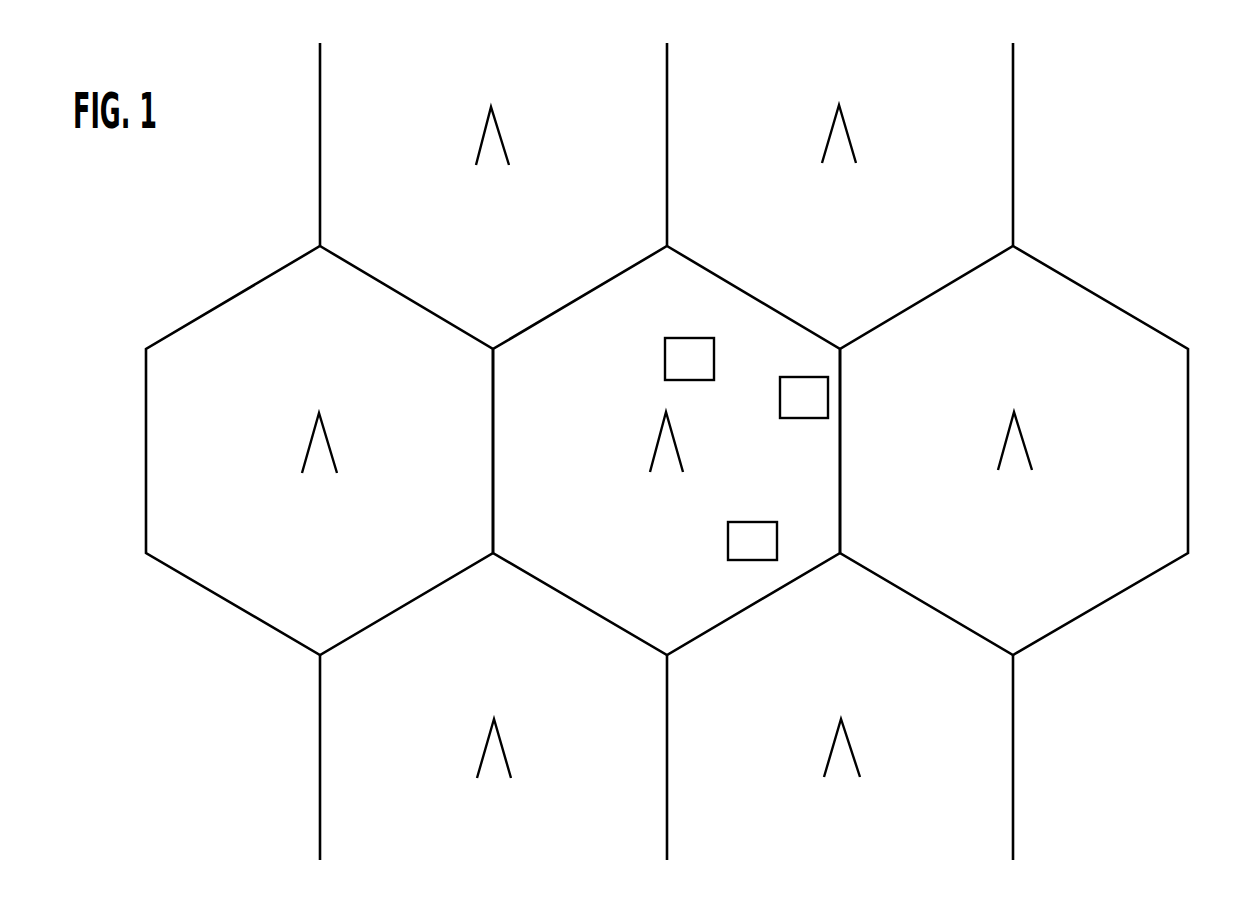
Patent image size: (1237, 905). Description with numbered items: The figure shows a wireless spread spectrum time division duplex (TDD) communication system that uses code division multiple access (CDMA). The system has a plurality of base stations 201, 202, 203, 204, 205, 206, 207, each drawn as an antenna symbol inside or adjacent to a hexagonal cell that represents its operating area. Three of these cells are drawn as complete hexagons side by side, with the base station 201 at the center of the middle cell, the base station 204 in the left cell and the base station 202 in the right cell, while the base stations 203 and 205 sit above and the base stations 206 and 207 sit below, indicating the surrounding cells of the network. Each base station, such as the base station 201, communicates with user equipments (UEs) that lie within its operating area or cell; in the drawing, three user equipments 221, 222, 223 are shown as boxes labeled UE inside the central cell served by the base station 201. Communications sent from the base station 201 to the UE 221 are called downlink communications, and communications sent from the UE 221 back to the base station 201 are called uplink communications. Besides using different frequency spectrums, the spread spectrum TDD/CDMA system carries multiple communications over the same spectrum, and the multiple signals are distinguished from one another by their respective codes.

The base station 201 is at (672, 464).
The base station 202 is at (1020, 463).
The base station 203 is at (498, 156).
The base station 204 is at (325, 464).
The base station 205 is at (845, 155).
The base station 206 is at (500, 769).
The base station 207 is at (847, 768).
The user equipment 221 is at (691, 380).
The user equipment 222 is at (804, 419).
The user equipment 223 is at (736, 561).